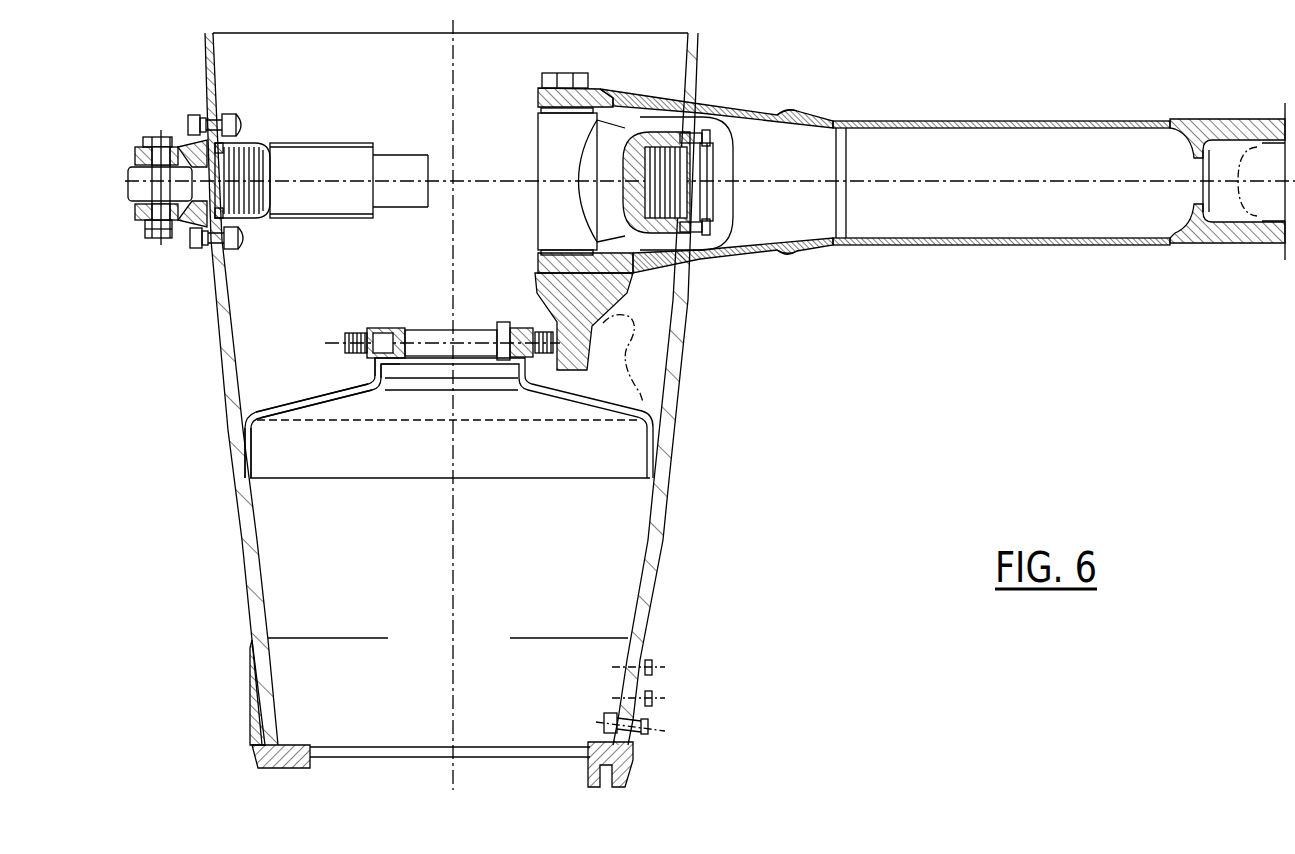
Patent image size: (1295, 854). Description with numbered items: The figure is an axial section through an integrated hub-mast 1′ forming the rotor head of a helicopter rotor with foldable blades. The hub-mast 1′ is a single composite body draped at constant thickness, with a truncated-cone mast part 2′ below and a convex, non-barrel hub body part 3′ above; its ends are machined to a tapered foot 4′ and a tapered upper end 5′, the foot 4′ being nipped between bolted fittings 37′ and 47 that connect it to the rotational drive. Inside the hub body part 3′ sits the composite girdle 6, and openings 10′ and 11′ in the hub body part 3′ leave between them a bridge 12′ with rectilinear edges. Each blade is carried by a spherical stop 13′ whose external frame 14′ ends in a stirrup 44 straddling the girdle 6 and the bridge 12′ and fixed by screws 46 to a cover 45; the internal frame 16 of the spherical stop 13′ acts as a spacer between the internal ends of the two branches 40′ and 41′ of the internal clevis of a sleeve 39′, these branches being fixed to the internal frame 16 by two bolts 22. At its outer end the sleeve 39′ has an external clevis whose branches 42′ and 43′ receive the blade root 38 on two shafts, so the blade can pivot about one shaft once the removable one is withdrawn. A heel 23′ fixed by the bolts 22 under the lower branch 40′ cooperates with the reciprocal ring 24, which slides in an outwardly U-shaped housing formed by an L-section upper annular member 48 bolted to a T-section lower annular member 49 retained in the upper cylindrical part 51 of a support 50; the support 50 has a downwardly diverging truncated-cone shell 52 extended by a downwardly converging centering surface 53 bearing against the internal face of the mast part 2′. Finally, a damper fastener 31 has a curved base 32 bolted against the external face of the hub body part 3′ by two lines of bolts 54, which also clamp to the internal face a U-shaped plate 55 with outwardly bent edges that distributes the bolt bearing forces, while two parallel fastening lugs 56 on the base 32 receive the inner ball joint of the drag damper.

The hub-mast 1′ is at (672, 376).
The mast part 2′ is at (648, 523).
The hub body part 3′ is at (220, 336).
The foot 4′ is at (258, 680).
The upper end 5′ is at (206, 54).
The girdle 6 is at (236, 160).
The opening 10′ is at (688, 282).
The opening 11′ is at (698, 88).
The bridge 12′ is at (693, 163).
The spherical stop 13′ is at (618, 124).
The external frame 14′ is at (622, 198).
The internal frame 16 is at (545, 147).
The bolts 22 is at (548, 74).
The heel 23′ is at (572, 340).
The reciprocal ring 24 is at (350, 330).
The damper fastener 31 is at (137, 232).
The curved base 32 is at (192, 222).
The bolted fitting 37′ is at (640, 716).
The blade root 38 is at (1243, 168).
The sleeve 39′ is at (980, 121).
The lower branch 40′ is at (787, 253).
The branch 41′ is at (796, 108).
The branch 42′ is at (1245, 240).
The branch 43′ is at (1253, 122).
The stirrup 44 is at (654, 132).
The cover 45 is at (712, 176).
The screws 46 is at (716, 228).
The bolted fitting 47 is at (284, 724).
The upper annular member 48 is at (392, 328).
The lower annular member 49 is at (392, 362).
The support 50 is at (558, 418).
The upper cylindrical part 51 is at (374, 374).
The shell 52 is at (293, 394).
The centering surface 53 is at (252, 447).
The bolts 54 is at (232, 120).
The U-shaped plate 55 is at (342, 152).
The fastening lugs 56 is at (152, 175).